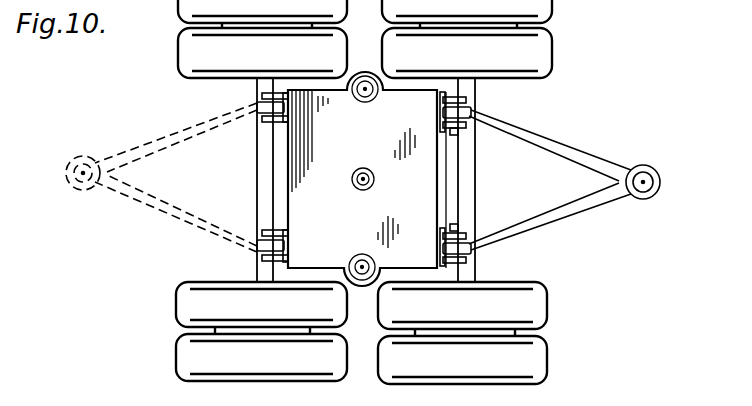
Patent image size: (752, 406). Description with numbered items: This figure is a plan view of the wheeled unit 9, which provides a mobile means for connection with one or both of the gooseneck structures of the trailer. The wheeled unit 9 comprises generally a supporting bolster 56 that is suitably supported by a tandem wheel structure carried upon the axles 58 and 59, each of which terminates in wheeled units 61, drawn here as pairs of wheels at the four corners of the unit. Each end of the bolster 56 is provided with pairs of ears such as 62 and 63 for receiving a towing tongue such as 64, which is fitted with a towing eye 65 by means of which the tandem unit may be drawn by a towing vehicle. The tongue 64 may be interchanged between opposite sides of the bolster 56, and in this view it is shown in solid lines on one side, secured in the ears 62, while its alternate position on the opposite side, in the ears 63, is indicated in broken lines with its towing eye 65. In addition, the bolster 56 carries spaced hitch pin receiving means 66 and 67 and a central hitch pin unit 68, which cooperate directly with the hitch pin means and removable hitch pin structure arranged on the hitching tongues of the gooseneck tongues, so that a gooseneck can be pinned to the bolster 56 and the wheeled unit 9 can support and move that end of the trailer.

The wheeled unit 9 is at (190, 239).
The supporting bolster 56 is at (386, 159).
The axle 58 is at (257, 165).
The axle 59 is at (465, 179).
The wheeled units 61 is at (280, 368).
The ears 62 is at (468, 99).
The ears 63 is at (266, 112).
The towing tongue 64 is at (566, 152).
The towing eye 65 is at (657, 195).
The hitch pin receiving means 66 is at (360, 254).
The hitch pin receiving means 67 is at (358, 103).
The central hitch pin unit 68 is at (371, 187).